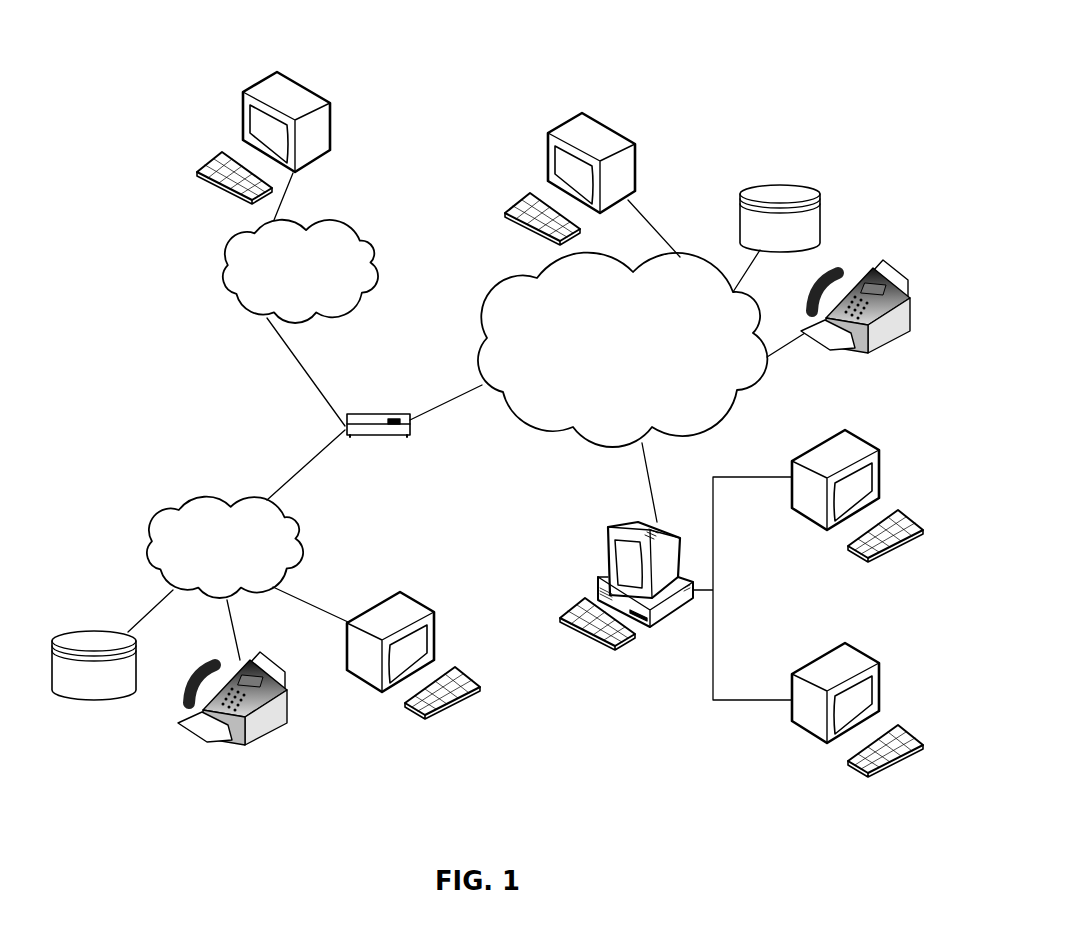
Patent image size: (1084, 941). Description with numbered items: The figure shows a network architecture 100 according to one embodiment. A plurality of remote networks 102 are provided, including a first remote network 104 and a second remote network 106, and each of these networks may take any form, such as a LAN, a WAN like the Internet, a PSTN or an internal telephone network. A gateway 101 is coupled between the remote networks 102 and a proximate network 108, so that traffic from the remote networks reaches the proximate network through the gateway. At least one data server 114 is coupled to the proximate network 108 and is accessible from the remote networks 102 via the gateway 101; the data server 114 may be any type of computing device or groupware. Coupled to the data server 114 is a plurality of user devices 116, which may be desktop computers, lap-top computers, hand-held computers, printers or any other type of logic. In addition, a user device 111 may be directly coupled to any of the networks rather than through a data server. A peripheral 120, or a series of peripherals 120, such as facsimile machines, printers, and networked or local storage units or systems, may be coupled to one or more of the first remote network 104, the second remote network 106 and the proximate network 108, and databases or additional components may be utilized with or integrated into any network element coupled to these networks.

The network architecture 100 is at (186, 59).
The gateway 101 is at (363, 412).
The remote networks 102 is at (213, 329).
The first remote network 104 is at (152, 523).
The second remote network 106 is at (370, 243).
The proximate network 108 is at (727, 413).
The user device 111 is at (632, 148).
The data server 114 is at (608, 543).
The user devices 116 is at (330, 112).
The peripheral 120 is at (820, 196).